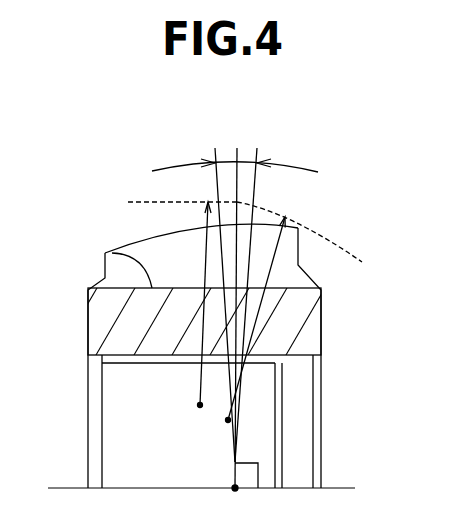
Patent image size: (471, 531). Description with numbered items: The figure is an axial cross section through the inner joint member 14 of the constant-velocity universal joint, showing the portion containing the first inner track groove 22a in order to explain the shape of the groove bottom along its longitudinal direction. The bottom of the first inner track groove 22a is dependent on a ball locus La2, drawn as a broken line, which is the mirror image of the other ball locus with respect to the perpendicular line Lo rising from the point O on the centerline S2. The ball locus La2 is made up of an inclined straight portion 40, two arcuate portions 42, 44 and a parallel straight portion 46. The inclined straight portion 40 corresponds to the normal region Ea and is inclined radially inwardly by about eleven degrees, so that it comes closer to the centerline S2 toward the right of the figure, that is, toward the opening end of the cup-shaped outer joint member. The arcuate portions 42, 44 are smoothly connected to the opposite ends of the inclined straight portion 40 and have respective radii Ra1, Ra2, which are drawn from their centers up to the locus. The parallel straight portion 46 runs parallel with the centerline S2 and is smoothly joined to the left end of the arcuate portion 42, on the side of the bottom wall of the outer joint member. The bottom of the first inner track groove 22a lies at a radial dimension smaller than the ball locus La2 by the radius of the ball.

The inner joint member 14 is at (201, 321).
The first inner track groove 22a is at (112, 253).
The inclined straight portion 40 is at (252, 203).
The arcuate portion 42 is at (207, 195).
The arcuate portion 44 is at (317, 228).
The parallel straight portion 46 is at (166, 203).
The perpendicular line Lo is at (236, 303).
The normal region Ea is at (235, 157).
The radius of arcuate portion 42 Ra1 is at (186, 305).
The radius of arcuate portion 44 Ra2 is at (265, 320).
The ball locus La2 is at (390, 275).
The centerline S2 is at (182, 489).
The origin / center point O is at (230, 500).